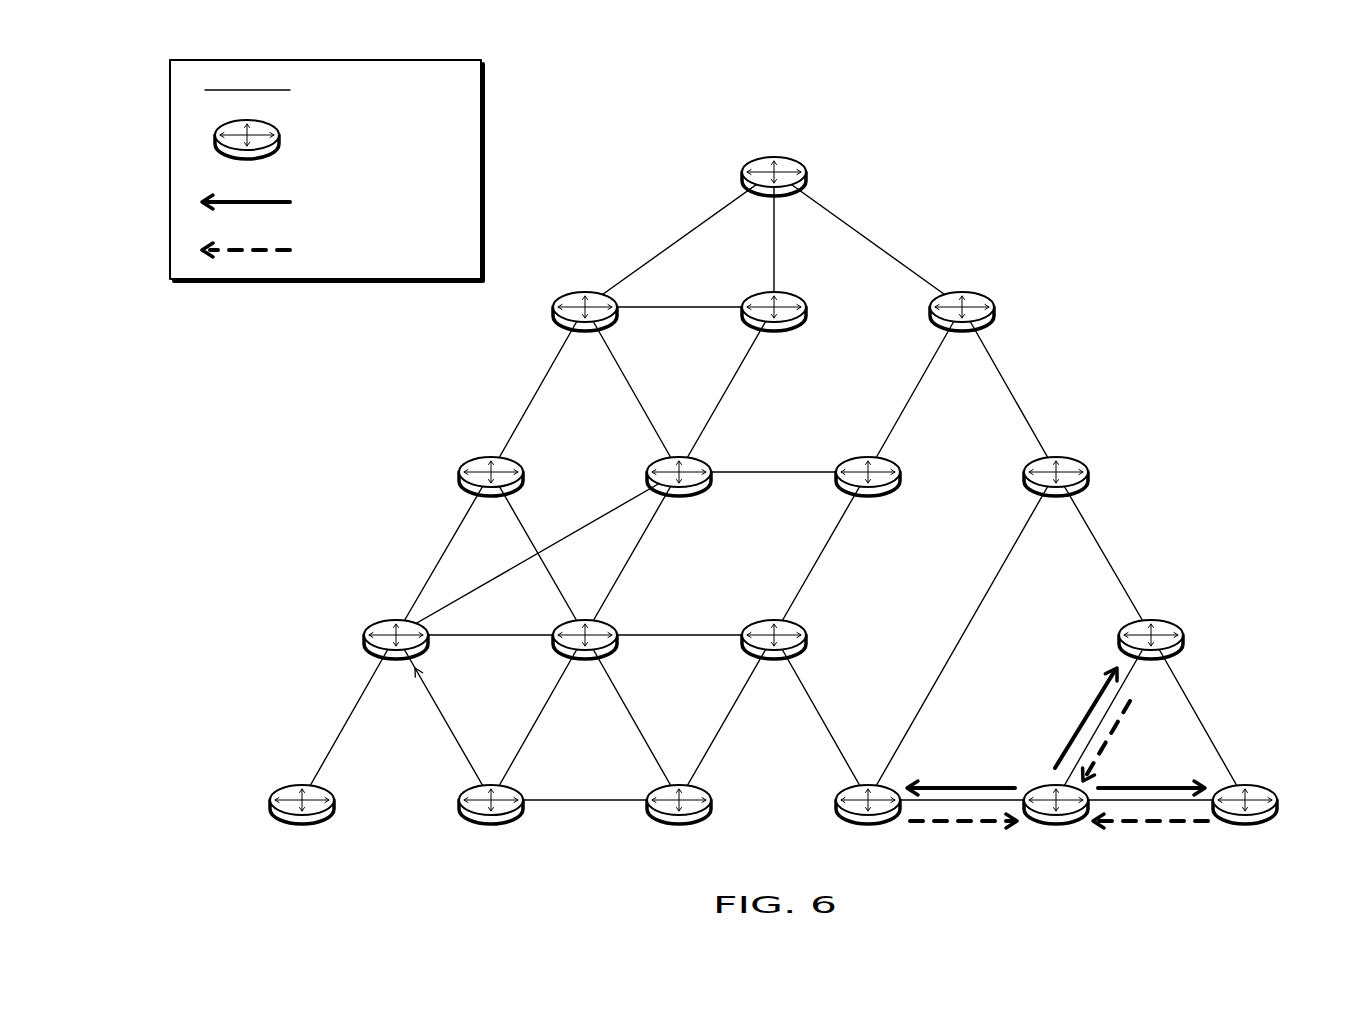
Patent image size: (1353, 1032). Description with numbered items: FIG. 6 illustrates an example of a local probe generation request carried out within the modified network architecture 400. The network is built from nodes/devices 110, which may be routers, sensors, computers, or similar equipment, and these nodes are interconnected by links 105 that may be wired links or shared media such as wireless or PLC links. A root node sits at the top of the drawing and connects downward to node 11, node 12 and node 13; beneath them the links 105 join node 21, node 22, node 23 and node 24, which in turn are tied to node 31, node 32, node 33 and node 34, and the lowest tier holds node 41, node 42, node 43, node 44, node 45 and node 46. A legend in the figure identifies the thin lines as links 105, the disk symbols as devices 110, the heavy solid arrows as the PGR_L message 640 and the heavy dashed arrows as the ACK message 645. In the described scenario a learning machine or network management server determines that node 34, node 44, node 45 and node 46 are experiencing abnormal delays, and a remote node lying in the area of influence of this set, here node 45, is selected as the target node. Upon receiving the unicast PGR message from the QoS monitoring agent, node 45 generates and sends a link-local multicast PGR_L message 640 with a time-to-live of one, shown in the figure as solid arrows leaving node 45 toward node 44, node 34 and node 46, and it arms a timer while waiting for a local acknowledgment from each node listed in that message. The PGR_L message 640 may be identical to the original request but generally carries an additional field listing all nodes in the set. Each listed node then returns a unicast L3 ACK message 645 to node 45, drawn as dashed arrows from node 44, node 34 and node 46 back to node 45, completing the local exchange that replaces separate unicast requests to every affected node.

The links 105 is at (317, 89).
The nodes/devices 110 is at (331, 139).
The PGR_L message 640 is at (703, 491).
The ACK message 645 is at (705, 532).
The modified network architecture 400 is at (1274, 119).
The node 11 is at (585, 331).
The node 12 is at (774, 331).
The node 13 is at (962, 331).
The node 21 is at (491, 496).
The node 22 is at (679, 496).
The node 23 is at (868, 496).
The node 24 is at (1056, 496).
The node 31 is at (396, 659).
The node 32 is at (585, 659).
The node 33 is at (774, 659).
The node 34 is at (1151, 659).
The node 41 is at (302, 824).
The node 42 is at (491, 824).
The node 43 is at (679, 824).
The node 44 is at (868, 824).
The node 45 is at (1056, 824).
The node 46 is at (1245, 824).